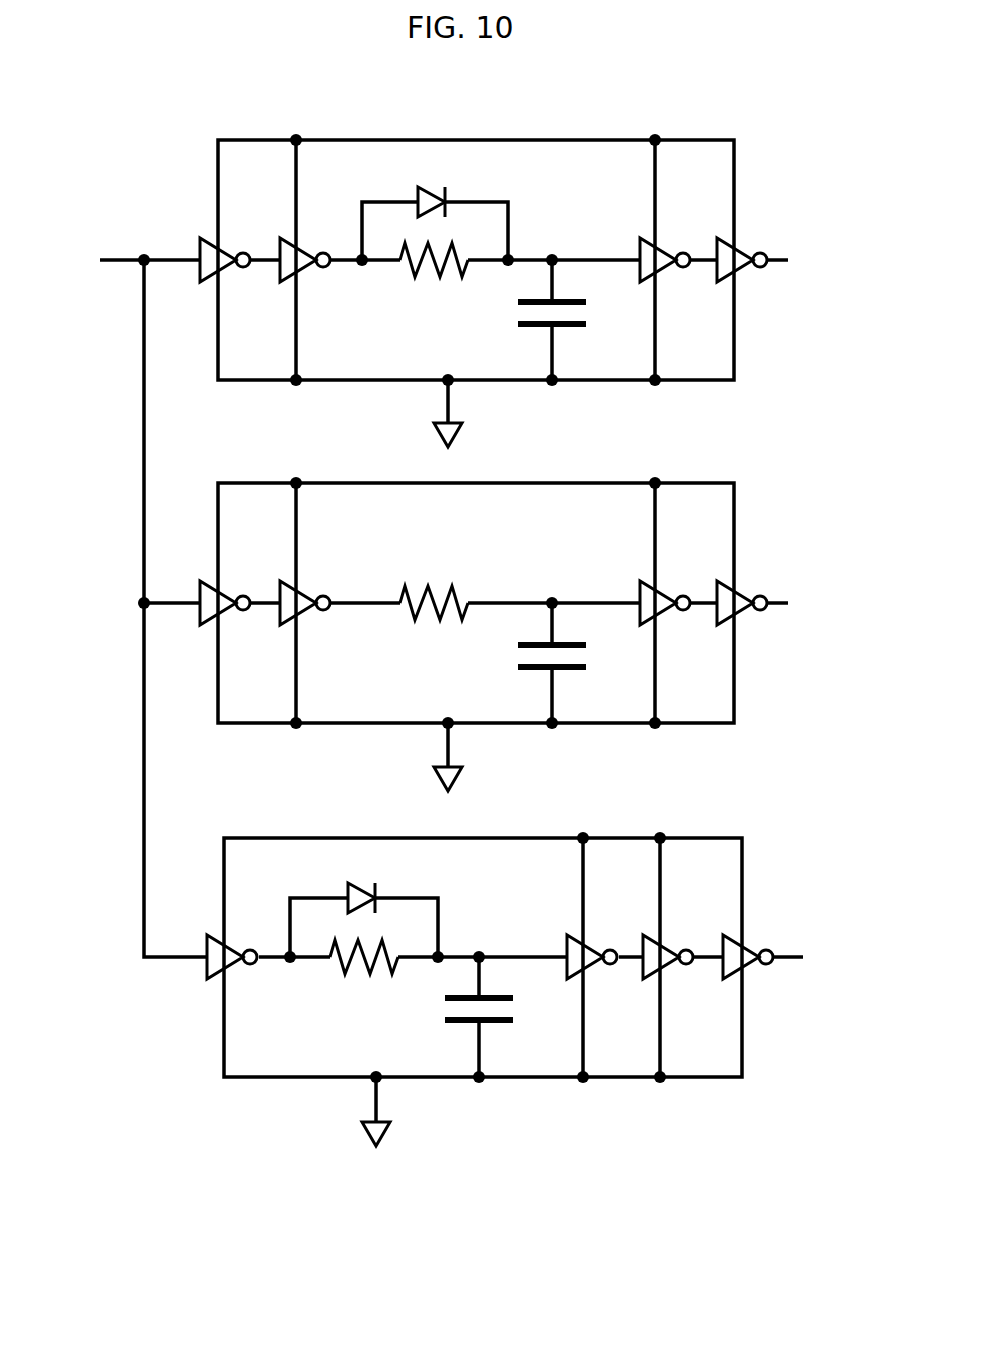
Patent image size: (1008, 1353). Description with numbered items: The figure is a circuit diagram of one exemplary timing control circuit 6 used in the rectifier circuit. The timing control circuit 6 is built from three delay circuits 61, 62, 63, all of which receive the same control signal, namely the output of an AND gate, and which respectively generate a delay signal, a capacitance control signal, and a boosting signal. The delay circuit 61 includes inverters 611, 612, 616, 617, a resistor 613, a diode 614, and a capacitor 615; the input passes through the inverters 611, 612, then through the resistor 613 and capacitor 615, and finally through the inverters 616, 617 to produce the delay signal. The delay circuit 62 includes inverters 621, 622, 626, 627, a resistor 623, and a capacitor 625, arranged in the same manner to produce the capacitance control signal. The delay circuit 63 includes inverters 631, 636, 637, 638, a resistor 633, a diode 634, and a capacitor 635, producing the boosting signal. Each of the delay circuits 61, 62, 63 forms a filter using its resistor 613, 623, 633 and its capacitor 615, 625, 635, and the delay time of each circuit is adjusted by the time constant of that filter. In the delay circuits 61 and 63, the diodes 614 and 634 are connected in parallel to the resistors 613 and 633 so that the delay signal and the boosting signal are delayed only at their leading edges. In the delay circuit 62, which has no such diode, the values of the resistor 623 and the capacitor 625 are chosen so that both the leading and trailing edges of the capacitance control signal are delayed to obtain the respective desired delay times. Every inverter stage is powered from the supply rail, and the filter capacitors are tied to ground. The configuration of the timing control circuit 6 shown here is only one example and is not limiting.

The timing control circuit 6 is at (582, 75).
The delay circuit 61 is at (760, 166).
The delay circuit 62 is at (762, 506).
The delay circuit 63 is at (767, 862).
The inverter 611 is at (205, 244).
The inverter 612 is at (283, 244).
The resistor 613 is at (410, 272).
The diode 614 is at (430, 190).
The capacitor 615 is at (513, 313).
The inverter 616 is at (641, 244).
The inverter 617 is at (717, 244).
The inverter 621 is at (205, 587).
The inverter 622 is at (283, 587).
The resistor 623 is at (410, 615).
The capacitor 625 is at (513, 656).
The inverter 626 is at (641, 587).
The inverter 627 is at (717, 587).
The inverter 631 is at (210, 944).
The resistor 633 is at (340, 974).
The diode 634 is at (362, 886).
The capacitor 635 is at (443, 1011).
The inverter 636 is at (571, 944).
The inverter 637 is at (646, 944).
The inverter 638 is at (726, 944).